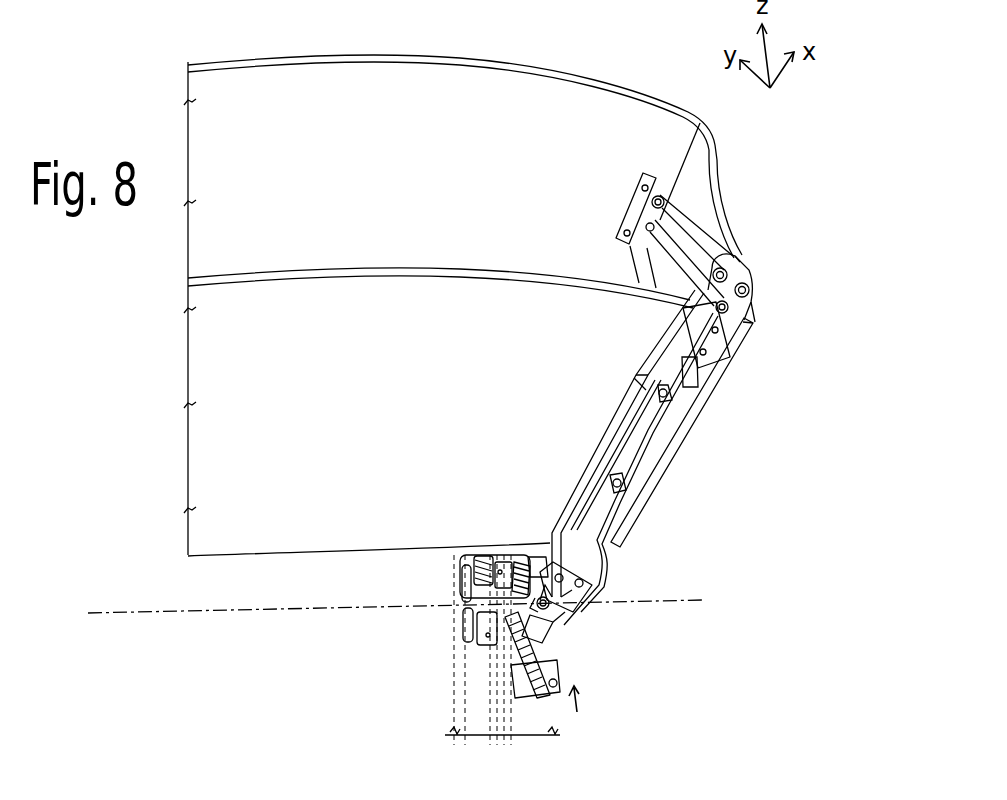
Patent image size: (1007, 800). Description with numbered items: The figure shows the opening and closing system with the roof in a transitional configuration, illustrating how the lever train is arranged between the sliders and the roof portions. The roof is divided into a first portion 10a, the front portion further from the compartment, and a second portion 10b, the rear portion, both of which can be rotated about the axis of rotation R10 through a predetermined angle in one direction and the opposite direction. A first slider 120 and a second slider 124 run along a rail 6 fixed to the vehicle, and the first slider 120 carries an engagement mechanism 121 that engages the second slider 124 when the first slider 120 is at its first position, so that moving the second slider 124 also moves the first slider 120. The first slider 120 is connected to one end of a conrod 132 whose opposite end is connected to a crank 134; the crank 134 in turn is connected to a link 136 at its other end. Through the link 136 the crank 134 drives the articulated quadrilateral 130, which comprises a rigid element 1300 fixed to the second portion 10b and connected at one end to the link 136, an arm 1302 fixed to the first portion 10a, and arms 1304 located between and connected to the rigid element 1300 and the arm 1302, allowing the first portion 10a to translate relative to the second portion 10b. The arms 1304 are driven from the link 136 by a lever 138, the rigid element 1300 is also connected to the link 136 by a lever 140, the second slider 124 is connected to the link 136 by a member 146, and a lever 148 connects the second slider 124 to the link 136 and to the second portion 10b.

The first portion 10a is at (613, 108).
The second portion 10b is at (188, 293).
The arm 1302 is at (672, 203).
The arms 1304 is at (758, 265).
The articulated quadrilateral 130 is at (773, 304).
The lever 138 is at (710, 377).
The rigid element 1300 is at (680, 417).
The lever 148 is at (585, 485).
The member 146 is at (540, 560).
The lever 140 is at (590, 533).
The link 136 is at (602, 590).
The crank 134 is at (550, 623).
The conrod 132 is at (560, 648).
The second slider 124 is at (462, 576).
The engagement mechanism 121 is at (490, 643).
The first slider 120 is at (506, 656).
The rail 6 is at (472, 700).
The axis of rotation R10 is at (220, 612).